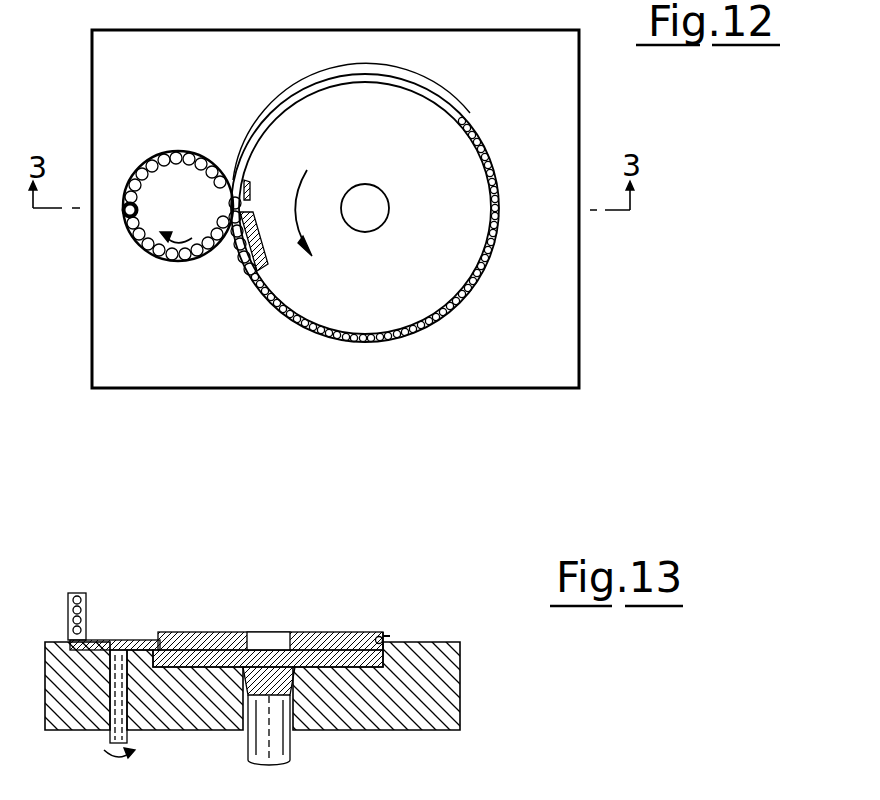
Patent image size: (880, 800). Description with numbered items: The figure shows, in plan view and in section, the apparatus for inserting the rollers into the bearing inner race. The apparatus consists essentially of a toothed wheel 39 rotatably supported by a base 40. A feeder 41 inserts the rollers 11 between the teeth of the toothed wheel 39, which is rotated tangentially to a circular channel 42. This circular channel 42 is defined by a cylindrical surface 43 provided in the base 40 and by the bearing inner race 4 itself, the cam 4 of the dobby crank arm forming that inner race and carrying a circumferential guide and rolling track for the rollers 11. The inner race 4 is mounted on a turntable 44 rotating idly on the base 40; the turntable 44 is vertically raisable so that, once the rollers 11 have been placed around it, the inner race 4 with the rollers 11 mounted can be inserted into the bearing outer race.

In FIG. 12, the cam 4 is at (470, 135).
In FIG. 13, the cam 4 is at (228, 632).
In FIG. 12, the rollers 11 is at (157, 165).
In FIG. 13, the rollers 11 is at (63, 623).
In FIG. 12, the toothed wheel 39 is at (194, 185).
In FIG. 13, the toothed wheel 39 is at (107, 640).
In FIG. 12, the base 40 is at (100, 86).
In FIG. 13, the base 40 is at (438, 660).
In FIG. 12, the feeder 41 is at (126, 202).
In FIG. 13, the feeder 41 is at (70, 598).
In FIG. 12, the circular channel 42 is at (297, 92).
In FIG. 13, the circular channel 42 is at (388, 636).
In FIG. 12, the cylindrical surface 43 is at (275, 120).
In FIG. 13, the cylindrical surface 43 is at (389, 636).
In FIG. 13, the turntable 44 is at (273, 650).